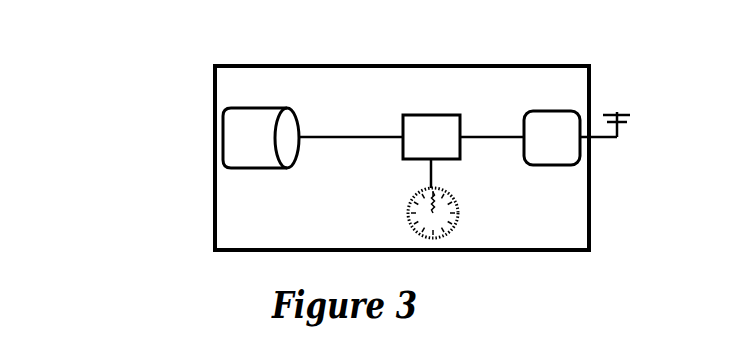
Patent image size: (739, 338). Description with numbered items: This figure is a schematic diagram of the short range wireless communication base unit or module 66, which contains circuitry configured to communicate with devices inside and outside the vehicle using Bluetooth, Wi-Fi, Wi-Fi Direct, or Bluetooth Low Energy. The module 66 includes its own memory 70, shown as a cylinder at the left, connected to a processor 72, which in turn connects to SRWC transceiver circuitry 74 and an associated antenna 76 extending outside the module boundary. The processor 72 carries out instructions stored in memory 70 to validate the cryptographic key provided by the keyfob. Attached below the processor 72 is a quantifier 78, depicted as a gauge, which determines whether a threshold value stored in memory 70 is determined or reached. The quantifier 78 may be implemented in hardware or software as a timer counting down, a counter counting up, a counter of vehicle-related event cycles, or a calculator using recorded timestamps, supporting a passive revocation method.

The SRWC base unit or module 66 is at (121, 124).
The memory 70 is at (261, 138).
The processor 72 is at (431, 137).
The SRWC transceiver circuitry 74 is at (552, 138).
The antenna 76 is at (601, 138).
The quantifier 78 is at (458, 219).